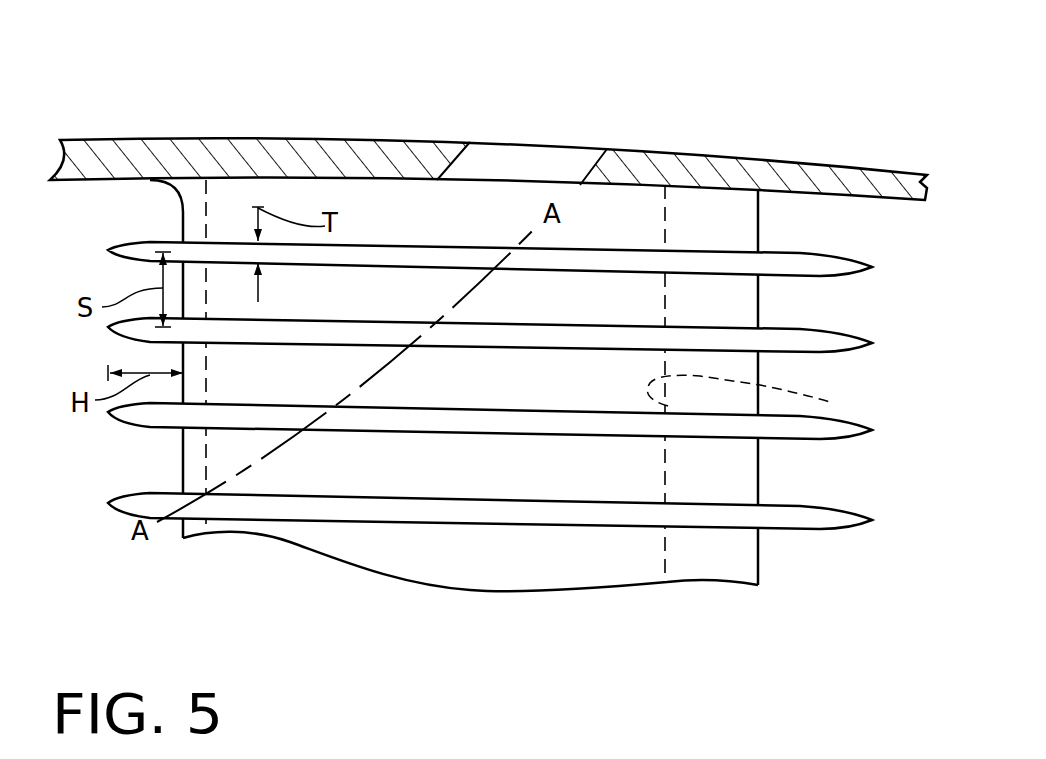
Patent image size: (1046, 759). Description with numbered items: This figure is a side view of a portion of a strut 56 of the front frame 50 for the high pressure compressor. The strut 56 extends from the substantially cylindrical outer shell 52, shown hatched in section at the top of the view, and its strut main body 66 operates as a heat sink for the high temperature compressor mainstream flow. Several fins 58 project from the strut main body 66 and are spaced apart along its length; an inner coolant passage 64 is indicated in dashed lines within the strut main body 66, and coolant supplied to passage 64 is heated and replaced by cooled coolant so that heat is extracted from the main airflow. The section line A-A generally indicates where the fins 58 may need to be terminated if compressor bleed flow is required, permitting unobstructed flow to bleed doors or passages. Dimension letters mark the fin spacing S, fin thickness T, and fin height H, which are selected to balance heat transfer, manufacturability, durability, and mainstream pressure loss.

The front frame 50 is at (615, 110).
The outer shell 52 is at (790, 172).
The strut 56 is at (760, 220).
The fins 58 is at (832, 260).
The inner coolant passage 64 is at (751, 396).
The strut main body 66 is at (750, 365).